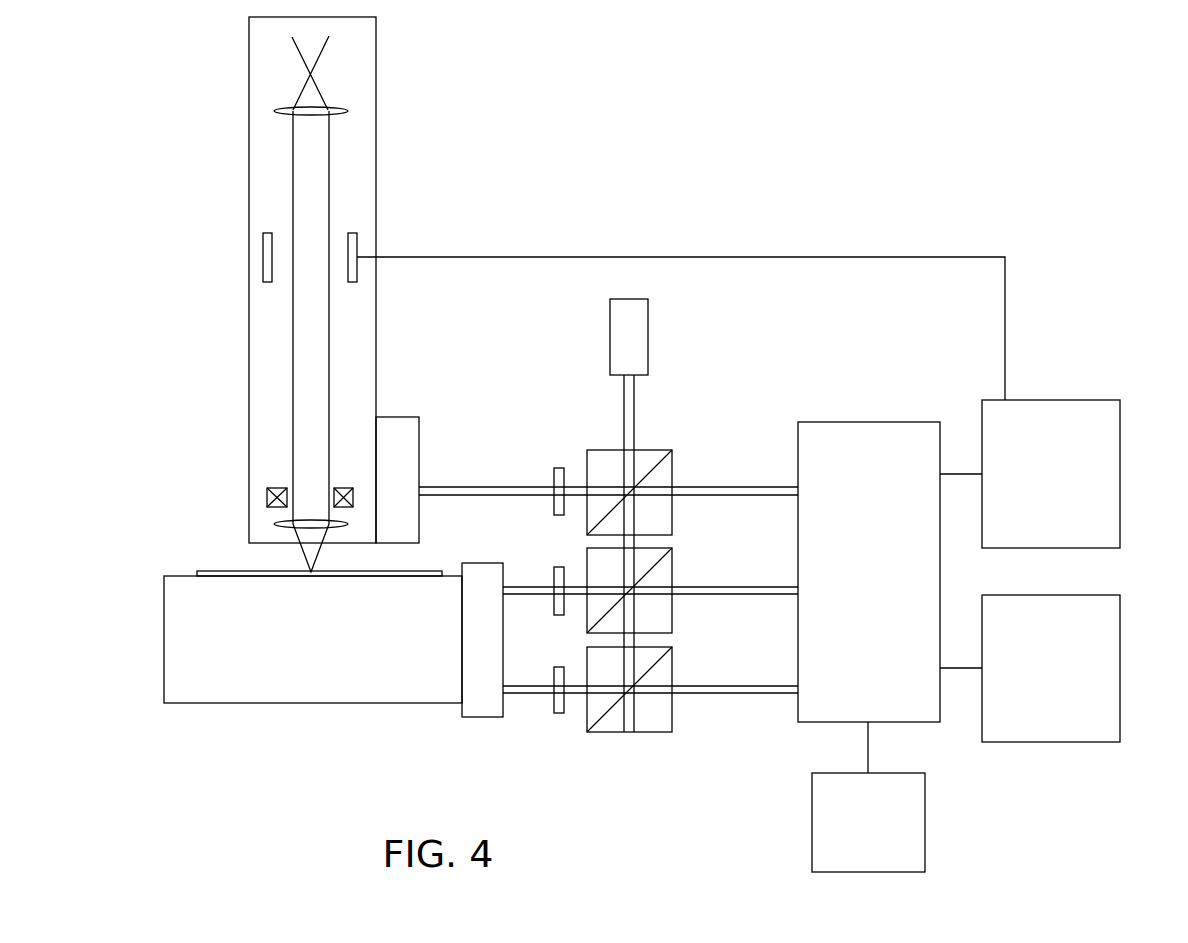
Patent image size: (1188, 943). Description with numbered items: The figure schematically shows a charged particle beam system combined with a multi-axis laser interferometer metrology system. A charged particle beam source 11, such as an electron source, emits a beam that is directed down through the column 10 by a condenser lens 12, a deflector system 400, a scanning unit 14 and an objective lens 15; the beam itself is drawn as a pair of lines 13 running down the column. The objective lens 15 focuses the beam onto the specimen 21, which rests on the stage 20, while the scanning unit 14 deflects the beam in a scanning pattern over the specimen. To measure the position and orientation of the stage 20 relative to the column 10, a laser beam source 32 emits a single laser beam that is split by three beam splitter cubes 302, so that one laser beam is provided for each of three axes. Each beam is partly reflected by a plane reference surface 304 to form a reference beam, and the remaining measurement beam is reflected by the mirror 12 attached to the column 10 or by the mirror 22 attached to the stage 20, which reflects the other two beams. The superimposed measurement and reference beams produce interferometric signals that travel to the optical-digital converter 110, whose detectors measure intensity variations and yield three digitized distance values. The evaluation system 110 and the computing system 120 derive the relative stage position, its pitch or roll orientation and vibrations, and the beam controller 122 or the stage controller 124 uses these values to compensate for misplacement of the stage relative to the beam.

The column 10 is at (363, 185).
The charged particle beam source 11 is at (312, 63).
The condenser lens / mirror 12 is at (283, 110).
The laser beam 13 is at (292, 197).
The scanning unit 14 is at (270, 490).
The objective lens 15 is at (277, 524).
The stage 20 is at (219, 691).
The specimen 21 is at (248, 572).
The mirror 22 is at (483, 698).
The laser beam source 32 is at (636, 318).
The beam splitter cubes 302 is at (660, 478).
The plane reference surface 304 is at (553, 472).
The optical-digital converter 110 is at (857, 437).
The computing system 120 is at (913, 823).
The beam controller 122 is at (1050, 415).
The stage controller 124 is at (1052, 730).
The deflector system 400 is at (357, 248).